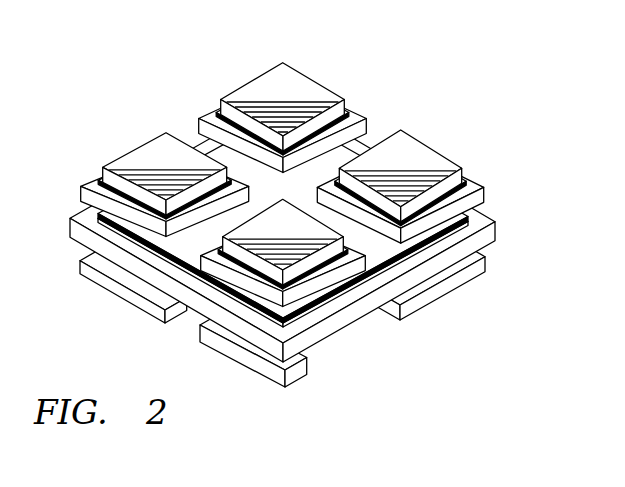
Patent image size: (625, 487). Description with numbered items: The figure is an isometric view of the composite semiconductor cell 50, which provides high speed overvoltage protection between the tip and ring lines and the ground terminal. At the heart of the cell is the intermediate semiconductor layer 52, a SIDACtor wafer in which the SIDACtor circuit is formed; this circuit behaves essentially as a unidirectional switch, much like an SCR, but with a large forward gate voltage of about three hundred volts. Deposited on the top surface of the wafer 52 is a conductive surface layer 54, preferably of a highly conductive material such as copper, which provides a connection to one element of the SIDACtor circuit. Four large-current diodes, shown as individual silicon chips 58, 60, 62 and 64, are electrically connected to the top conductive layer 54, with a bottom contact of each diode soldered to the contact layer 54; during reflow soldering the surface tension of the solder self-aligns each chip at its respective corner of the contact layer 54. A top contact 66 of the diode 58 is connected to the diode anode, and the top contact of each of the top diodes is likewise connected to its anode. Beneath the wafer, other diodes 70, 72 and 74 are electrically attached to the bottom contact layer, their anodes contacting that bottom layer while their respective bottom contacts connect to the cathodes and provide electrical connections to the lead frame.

The semiconductor cell 50 is at (302, 232).
The intermediate semiconductor layer 52 is at (490, 231).
The conductive surface layer 54 is at (366, 143).
The silicon chip 58 is at (284, 94).
The silicon chip 60 is at (121, 146).
The silicon chip 62 is at (267, 195).
The silicon chip 64 is at (443, 139).
The top contact 66 is at (260, 85).
The diode 70 is at (90, 292).
The diode 72 is at (248, 385).
The diode 74 is at (476, 290).